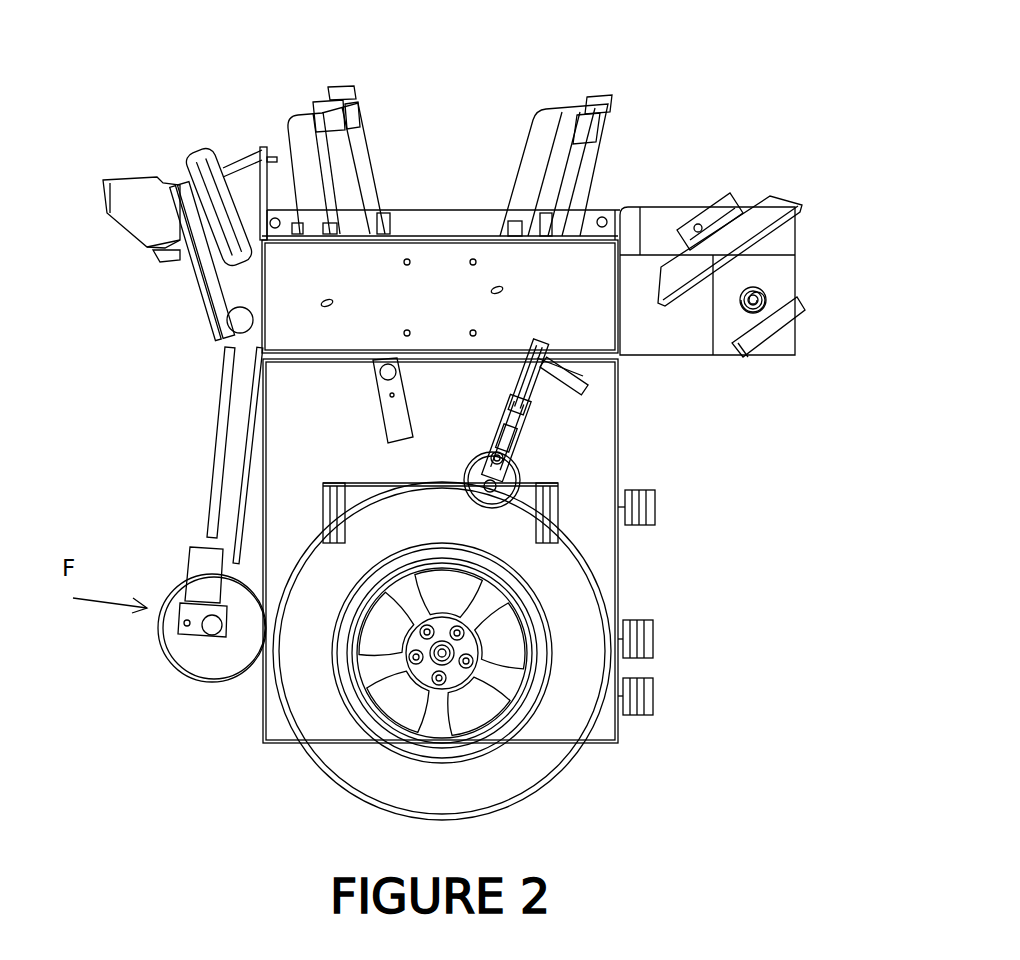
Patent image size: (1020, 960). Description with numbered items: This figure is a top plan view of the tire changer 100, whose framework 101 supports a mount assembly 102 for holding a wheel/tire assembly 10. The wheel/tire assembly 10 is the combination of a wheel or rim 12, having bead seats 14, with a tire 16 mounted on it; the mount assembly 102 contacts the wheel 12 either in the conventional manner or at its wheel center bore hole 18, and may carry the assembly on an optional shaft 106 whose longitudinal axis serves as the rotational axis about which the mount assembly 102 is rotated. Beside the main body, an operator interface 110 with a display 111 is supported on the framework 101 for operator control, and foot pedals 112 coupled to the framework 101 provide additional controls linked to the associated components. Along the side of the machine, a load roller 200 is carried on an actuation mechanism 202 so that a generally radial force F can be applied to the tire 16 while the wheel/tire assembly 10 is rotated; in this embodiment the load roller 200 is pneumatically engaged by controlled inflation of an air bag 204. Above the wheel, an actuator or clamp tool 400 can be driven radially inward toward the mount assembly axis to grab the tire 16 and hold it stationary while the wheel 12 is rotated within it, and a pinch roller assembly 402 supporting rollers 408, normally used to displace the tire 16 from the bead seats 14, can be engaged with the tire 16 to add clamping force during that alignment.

The wheel/tire assembly 10 is at (459, 683).
The wheel 12 is at (433, 723).
The bead seats 14 is at (547, 620).
The tire 16 is at (455, 787).
The wheel center bore hole 18 is at (432, 662).
The tire changer 100 is at (748, 129).
The framework 101 is at (615, 420).
The mount assembly 102 is at (410, 695).
The shaft 106 is at (452, 662).
The operator interface 110 is at (772, 277).
The display 111 is at (787, 228).
The foot pedals 112 is at (655, 506).
The load roller 200 is at (192, 678).
The actuation mechanism 202 is at (178, 268).
The air bag 204 is at (207, 150).
The clamp tool 400 is at (600, 367).
The upper pinch roller assembly 402 is at (600, 462).
The rollers 408 is at (467, 467).